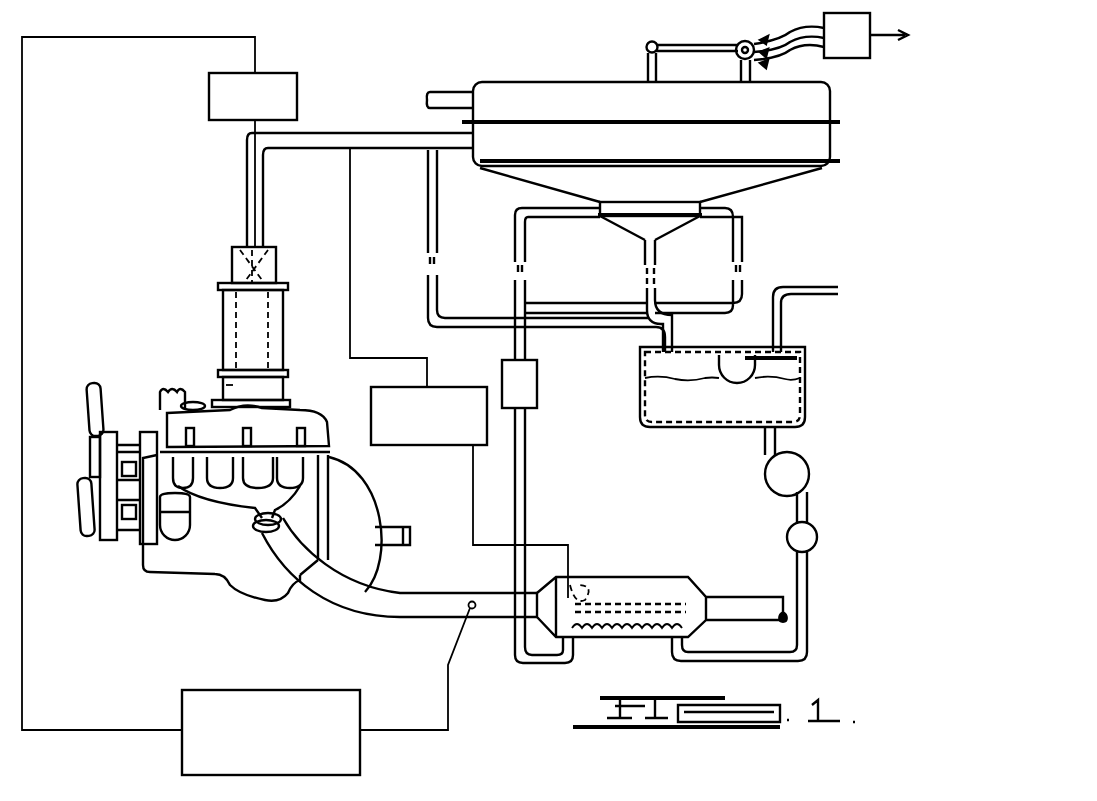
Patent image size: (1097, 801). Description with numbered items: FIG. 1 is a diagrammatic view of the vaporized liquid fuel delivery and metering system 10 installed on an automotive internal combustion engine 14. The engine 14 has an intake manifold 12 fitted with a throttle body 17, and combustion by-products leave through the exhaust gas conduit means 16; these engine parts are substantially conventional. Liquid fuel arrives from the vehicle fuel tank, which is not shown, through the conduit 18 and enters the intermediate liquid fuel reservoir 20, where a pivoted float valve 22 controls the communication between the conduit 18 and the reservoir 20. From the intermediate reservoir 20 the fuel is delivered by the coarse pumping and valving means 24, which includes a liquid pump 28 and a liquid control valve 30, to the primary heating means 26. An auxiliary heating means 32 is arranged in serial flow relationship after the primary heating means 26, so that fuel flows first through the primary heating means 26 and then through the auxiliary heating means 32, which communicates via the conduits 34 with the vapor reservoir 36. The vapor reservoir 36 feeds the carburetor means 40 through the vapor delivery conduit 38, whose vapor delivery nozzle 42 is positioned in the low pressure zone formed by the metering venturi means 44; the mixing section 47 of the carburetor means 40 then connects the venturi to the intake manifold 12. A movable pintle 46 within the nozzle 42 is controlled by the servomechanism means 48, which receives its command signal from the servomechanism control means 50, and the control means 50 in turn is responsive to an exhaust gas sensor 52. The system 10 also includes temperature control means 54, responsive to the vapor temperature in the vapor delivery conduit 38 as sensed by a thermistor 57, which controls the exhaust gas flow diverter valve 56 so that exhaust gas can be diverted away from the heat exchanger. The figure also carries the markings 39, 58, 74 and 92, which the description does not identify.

The vaporized liquid fuel delivery and metering system 10 is at (600, 418).
The intake manifold 12 is at (297, 411).
The internal combustion engine 14 is at (338, 456).
The exhaust gas conduit means 16 is at (343, 626).
The throttle body 17 is at (226, 385).
The conduit 18 is at (805, 287).
The intermediate liquid fuel reservoir 20 is at (640, 373).
The pivoted float valve 22 is at (745, 362).
The coarse pumping and valving means 24 is at (744, 252).
The primary heating means 26 is at (703, 578).
The liquid pump 28 is at (765, 472).
The liquid control valve 30 is at (818, 537).
The auxiliary heating means 32 is at (538, 374).
The conduits 34 is at (516, 236).
The vapor reservoir 36 is at (822, 148).
The vapor delivery conduit 38 is at (345, 132).
The canister inlet 39 is at (446, 96).
The carburetor means 40 is at (232, 272).
The vapor delivery nozzle 42 is at (242, 247).
The metering venturi means 44 is at (232, 263).
The movable pintle 46 is at (247, 185).
The mixing section 47 is at (223, 312).
The servomechanism means 48 is at (209, 95).
The servomechanism control means 50 is at (214, 692).
The exhaust gas sensor 52 is at (473, 601).
The temperature control means 54 is at (418, 447).
The exhaust gas flow diverter valve 56 is at (574, 602).
The thermistor 57 is at (348, 152).
The numeral 58 is at (741, 791).
The drain tube 74 is at (645, 250).
The numeral 92 is at (811, 792).